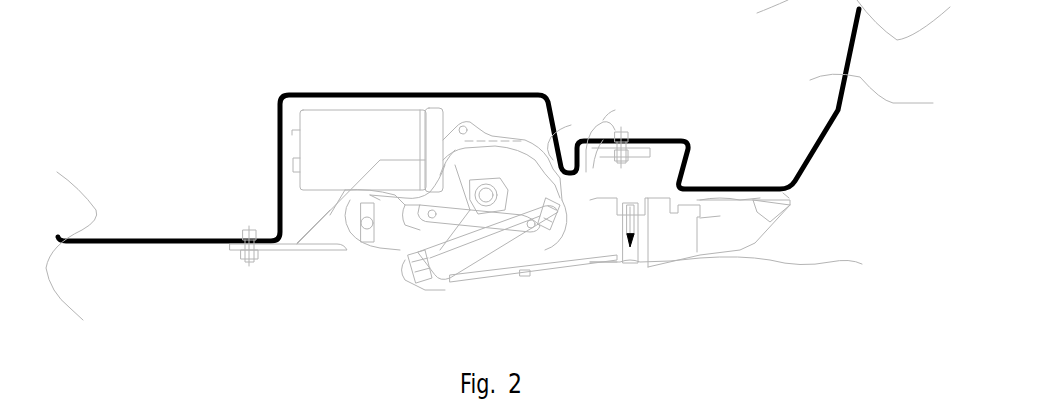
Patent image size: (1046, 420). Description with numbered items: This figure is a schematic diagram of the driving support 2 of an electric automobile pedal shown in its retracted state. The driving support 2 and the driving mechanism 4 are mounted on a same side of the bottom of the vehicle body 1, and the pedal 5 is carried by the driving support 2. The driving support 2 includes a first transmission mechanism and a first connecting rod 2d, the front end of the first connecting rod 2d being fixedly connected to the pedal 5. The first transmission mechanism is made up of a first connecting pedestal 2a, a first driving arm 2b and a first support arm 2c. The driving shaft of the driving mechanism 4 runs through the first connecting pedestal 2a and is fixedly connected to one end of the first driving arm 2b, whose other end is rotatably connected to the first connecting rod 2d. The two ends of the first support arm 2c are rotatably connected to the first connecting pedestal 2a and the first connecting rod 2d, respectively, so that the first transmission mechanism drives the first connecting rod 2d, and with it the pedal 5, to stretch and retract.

The vehicle body 1 is at (933, 103).
The driving support 2 is at (383, 286).
The first connecting pedestal 2a is at (596, 137).
The first driving arm 2b is at (352, 266).
The first support arm 2c is at (460, 255).
The first connecting rod 2d is at (564, 258).
The driving mechanism 4 is at (378, 132).
The pedal 5 is at (862, 264).